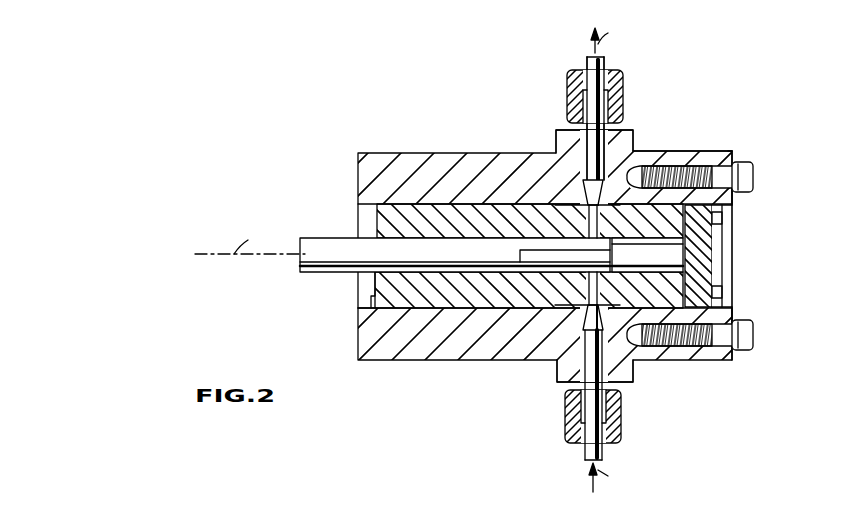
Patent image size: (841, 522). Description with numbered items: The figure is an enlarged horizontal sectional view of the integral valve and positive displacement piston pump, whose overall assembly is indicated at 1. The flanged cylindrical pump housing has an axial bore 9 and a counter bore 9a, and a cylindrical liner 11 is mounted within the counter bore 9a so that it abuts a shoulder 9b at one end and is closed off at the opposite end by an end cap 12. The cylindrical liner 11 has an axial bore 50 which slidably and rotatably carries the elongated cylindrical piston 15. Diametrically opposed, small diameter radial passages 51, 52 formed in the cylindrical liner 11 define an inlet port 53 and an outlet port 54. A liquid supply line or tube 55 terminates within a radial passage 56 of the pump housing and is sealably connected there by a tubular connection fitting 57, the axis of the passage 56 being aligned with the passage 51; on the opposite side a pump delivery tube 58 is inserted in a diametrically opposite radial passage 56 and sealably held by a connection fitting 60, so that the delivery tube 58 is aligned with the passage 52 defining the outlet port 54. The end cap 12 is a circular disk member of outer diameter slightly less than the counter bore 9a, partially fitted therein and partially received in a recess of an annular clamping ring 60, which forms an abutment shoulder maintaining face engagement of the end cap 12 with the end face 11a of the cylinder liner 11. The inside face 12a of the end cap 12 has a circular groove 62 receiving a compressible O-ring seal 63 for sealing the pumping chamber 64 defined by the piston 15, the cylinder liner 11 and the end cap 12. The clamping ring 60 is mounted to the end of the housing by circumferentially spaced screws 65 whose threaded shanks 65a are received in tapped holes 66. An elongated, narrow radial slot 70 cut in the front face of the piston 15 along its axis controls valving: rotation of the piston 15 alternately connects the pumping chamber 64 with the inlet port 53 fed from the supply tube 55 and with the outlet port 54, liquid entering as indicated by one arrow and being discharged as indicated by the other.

The dispensing device 1 is at (426, 0).
The axial bore 9 is at (366, 300).
The counter bore 9a is at (440, 303).
The shoulder 9b is at (372, 310).
The cylindrical liner 11 is at (463, 222).
The end face 11a is at (722, 222).
The end cap 12 is at (735, 258).
The inside face 12a is at (714, 245).
The piston 15 is at (312, 256).
The axial bore 50 is at (403, 200).
The radial passage 51 is at (542, 308).
The radial passage 52 is at (576, 200).
The inlet port 53 is at (614, 260).
The outlet port 54 is at (582, 240).
The liquid supply line 55 is at (586, 455).
The radial passage 56 is at (612, 140).
The tubular connection fitting 57 is at (620, 420).
The pump delivery tube 58 is at (604, 72).
The connection fitting 60 is at (620, 102).
The circular groove 62 is at (735, 205).
The O-ring seal 63 is at (738, 300).
The pumping chamber 64 is at (722, 287).
The screws 65 is at (745, 172).
The threaded shanks 65a is at (688, 352).
The tapped holes 66 is at (660, 150).
The slot 70 is at (507, 308).